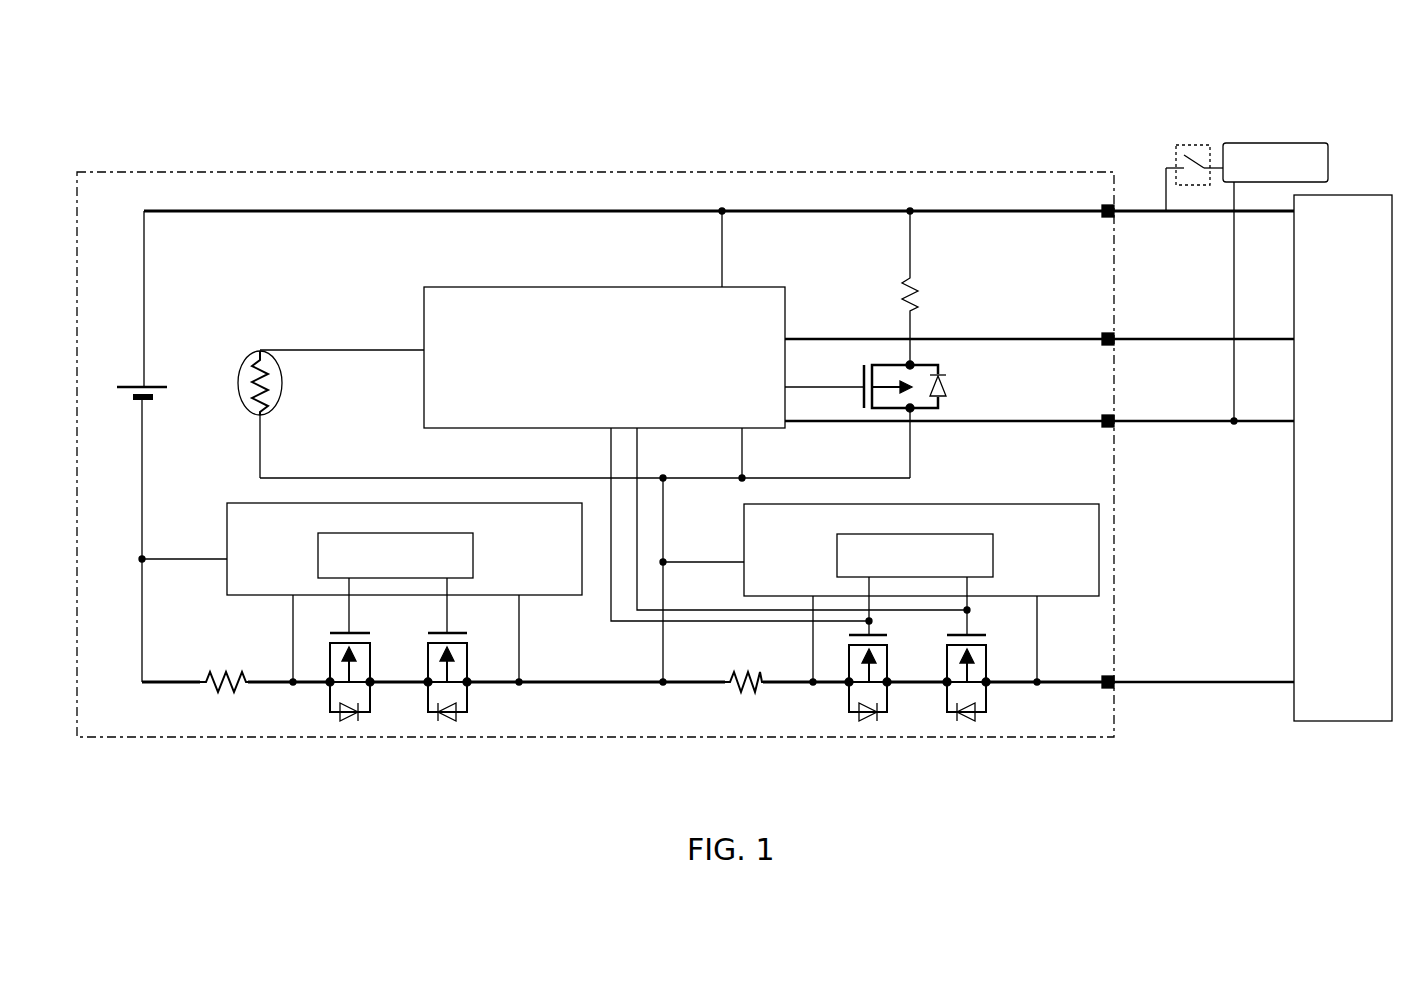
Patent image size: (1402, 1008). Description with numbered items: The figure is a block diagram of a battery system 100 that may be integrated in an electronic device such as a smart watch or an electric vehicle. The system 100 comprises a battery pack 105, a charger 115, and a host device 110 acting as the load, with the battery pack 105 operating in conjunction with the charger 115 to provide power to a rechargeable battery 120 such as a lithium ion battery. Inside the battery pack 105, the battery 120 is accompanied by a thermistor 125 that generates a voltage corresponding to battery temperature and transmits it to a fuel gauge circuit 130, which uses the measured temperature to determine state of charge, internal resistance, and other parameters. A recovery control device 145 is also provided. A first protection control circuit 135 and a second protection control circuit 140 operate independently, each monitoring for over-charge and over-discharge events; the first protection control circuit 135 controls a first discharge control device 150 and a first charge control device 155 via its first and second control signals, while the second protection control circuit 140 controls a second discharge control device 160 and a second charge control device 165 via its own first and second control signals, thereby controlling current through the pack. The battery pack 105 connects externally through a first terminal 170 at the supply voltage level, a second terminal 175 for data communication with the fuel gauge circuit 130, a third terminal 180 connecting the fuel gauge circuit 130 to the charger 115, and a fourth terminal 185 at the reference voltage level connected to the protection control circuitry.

The system 100 is at (172, 148).
The battery pack 105 is at (727, 172).
The host device 110 is at (1294, 536).
The charger 115 is at (1244, 143).
The rechargeable battery 120 is at (156, 385).
The thermistor 125 is at (248, 358).
The fuel gauge circuit 130 is at (540, 287).
The first protection control circuit 135 is at (246, 503).
The second protection control circuit 140 is at (973, 503).
The recovery control device 145 is at (882, 365).
The first discharge control device 150 is at (372, 659).
The first charge control device 155 is at (466, 660).
The second discharge control device 160 is at (888, 669).
The second charge control device 165 is at (983, 660).
The first terminal 170 is at (1112, 210).
The second terminal 175 is at (1112, 337).
The third terminal 180 is at (1113, 420).
The fourth terminal 185 is at (1114, 681).